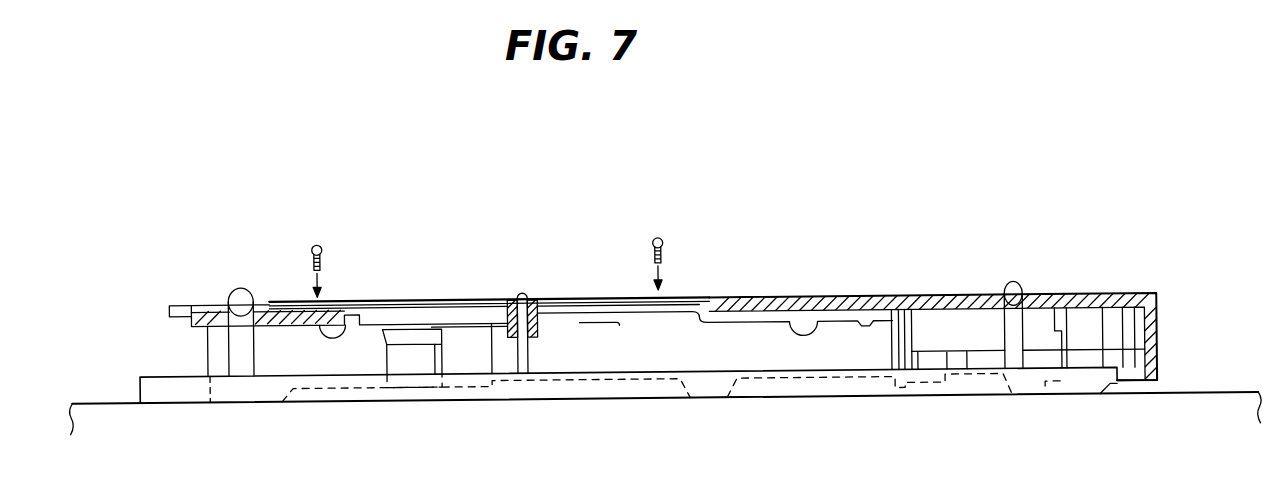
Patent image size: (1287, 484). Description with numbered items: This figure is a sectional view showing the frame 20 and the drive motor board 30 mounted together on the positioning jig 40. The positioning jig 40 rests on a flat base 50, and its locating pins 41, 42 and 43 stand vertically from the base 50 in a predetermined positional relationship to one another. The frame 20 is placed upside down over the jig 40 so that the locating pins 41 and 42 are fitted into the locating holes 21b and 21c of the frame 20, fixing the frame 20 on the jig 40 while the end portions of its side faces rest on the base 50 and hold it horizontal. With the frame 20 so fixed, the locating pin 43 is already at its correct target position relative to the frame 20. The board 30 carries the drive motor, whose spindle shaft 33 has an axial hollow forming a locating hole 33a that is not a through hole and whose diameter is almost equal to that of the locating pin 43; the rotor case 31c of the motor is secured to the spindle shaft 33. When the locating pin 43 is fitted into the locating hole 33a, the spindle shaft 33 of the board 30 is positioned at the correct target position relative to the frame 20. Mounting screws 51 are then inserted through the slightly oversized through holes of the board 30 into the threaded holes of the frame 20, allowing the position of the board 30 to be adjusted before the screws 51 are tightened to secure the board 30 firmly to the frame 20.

The frame 20 is at (1160, 297).
The locating hole 21b is at (247, 283).
The locating hole 21c is at (1008, 287).
The board 30 is at (693, 291).
The rotor case 31c is at (664, 326).
The spindle shaft 33 is at (512, 298).
The locating hole 33a is at (522, 293).
The positioning jig 40 is at (137, 365).
The locating pin 41 is at (231, 297).
The locating pin 42 is at (1018, 286).
The locating pin 43 is at (534, 298).
The flat base 50 is at (1201, 395).
The mounting screw 51 is at (321, 237).